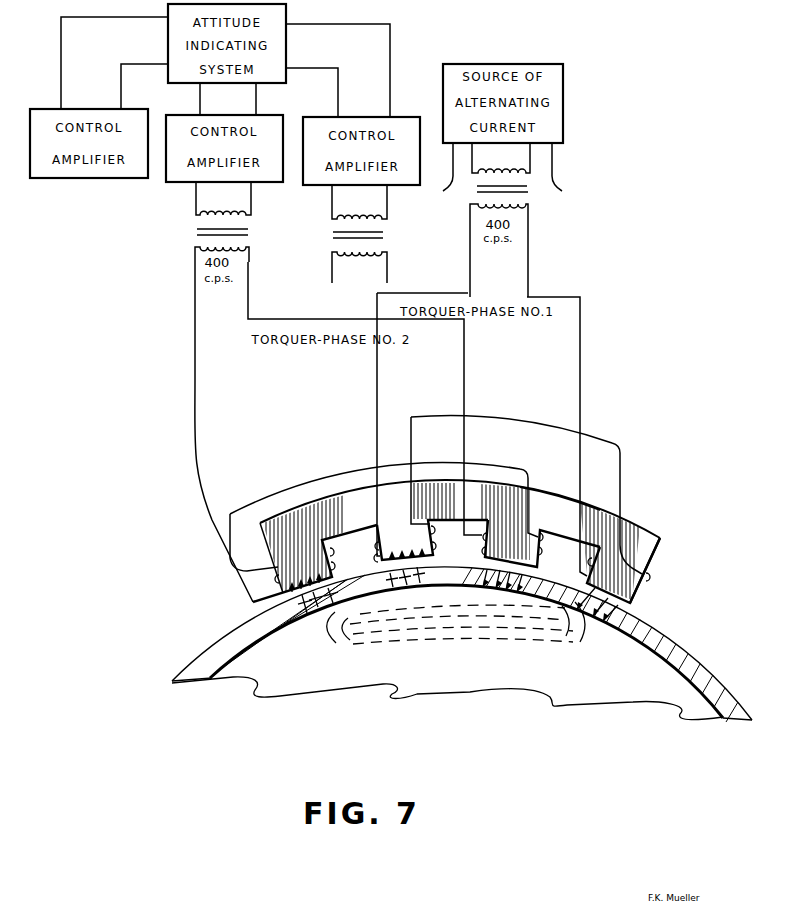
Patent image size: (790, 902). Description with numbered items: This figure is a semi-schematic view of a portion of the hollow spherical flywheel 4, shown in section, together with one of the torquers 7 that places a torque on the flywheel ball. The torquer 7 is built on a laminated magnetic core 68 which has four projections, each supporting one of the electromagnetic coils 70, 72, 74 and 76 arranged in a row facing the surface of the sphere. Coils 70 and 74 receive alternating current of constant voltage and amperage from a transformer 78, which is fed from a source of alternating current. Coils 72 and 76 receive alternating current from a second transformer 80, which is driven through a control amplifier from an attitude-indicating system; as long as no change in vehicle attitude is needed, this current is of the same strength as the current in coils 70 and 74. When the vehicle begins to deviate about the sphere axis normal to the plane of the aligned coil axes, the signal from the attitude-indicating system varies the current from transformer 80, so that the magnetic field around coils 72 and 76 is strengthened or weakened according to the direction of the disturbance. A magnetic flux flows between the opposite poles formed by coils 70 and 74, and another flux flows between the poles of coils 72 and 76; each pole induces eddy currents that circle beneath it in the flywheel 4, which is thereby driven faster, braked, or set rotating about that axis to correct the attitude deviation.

The spherical flywheel 4 is at (693, 668).
The torquer 7 is at (290, 506).
The laminated magnetic core 68 is at (548, 520).
The electromagnetic coil 70 is at (651, 575).
The electromagnetic coil 72 is at (541, 552).
The electromagnetic coil 74 is at (436, 552).
The electromagnetic coil 76 is at (333, 559).
The transformer 78 is at (526, 189).
The transformer 80 is at (196, 232).